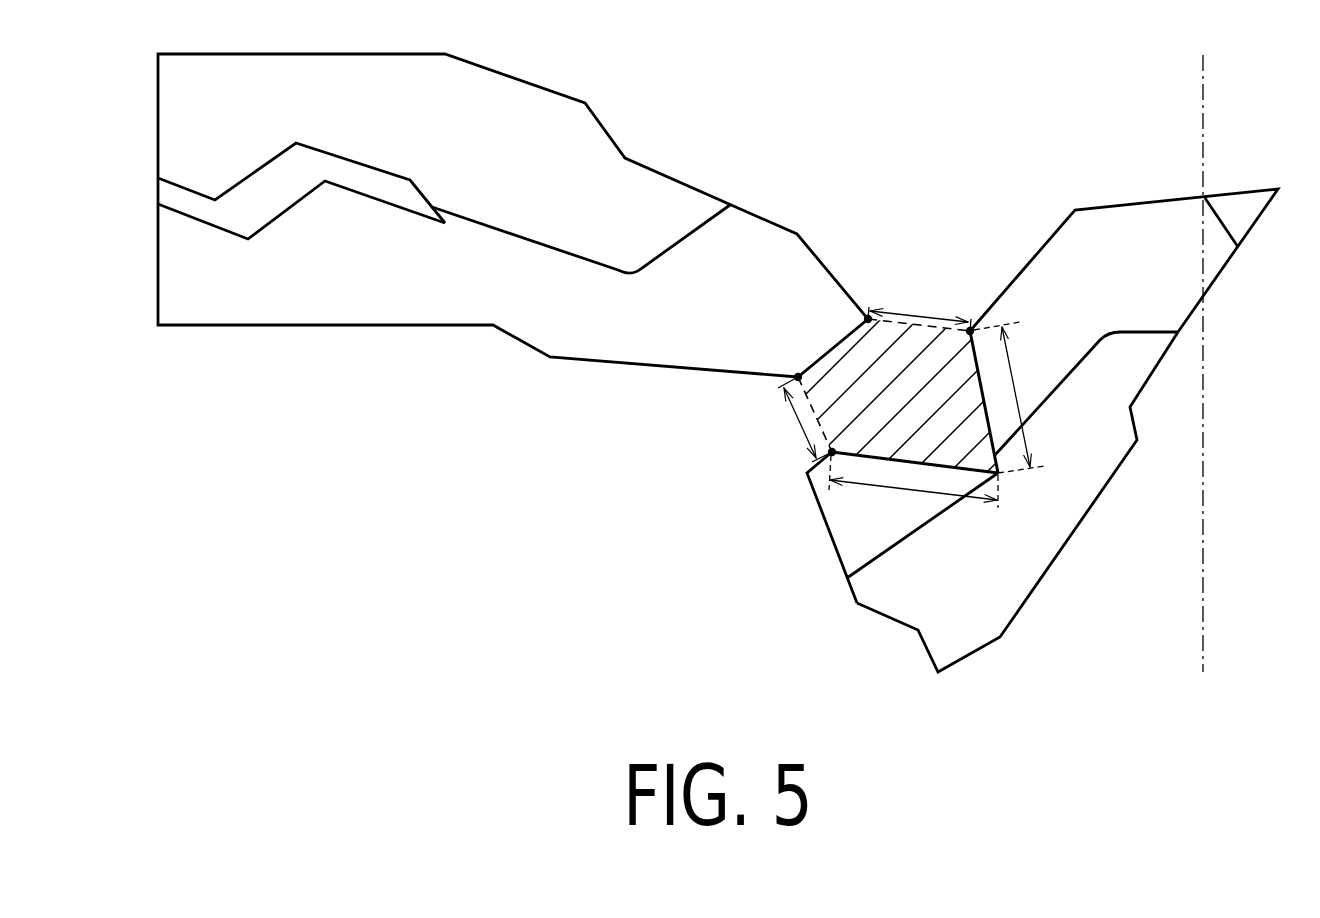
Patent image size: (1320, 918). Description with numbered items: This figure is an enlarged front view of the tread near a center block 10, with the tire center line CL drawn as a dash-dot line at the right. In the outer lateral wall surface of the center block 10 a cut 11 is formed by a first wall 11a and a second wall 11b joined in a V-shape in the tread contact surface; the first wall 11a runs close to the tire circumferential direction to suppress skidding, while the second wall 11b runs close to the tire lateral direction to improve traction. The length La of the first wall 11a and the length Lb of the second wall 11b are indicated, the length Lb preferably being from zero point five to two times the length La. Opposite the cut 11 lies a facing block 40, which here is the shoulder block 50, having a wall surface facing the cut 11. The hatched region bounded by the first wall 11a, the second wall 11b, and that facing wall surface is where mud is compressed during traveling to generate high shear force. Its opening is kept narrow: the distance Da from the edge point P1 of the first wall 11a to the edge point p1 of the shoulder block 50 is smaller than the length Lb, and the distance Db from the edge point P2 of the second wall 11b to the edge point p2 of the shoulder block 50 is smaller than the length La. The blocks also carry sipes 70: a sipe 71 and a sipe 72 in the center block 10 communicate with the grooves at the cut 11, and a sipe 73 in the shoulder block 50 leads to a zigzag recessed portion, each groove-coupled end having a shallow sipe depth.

The center block 10 is at (1132, 237).
The cut 11 is at (980, 460).
The first wall 11a is at (980, 380).
The second wall 11b is at (930, 463).
The facing block 40 is at (514, 215).
The shoulder block 50 is at (803, 317).
The sipe 70 is at (806, 453).
The sipe 71 is at (1073, 377).
The sipe 72 is at (892, 548).
The sipe 73 is at (570, 252).
The edge point P1 is at (869, 311).
The edge point p1 is at (970, 325).
The edge point P2 is at (793, 380).
The edge point p2 is at (827, 453).
The distance Da is at (919, 305).
The distance Db is at (794, 419).
The length La is at (1012, 397).
The length Lb is at (913, 489).
The center line CL is at (1203, 344).